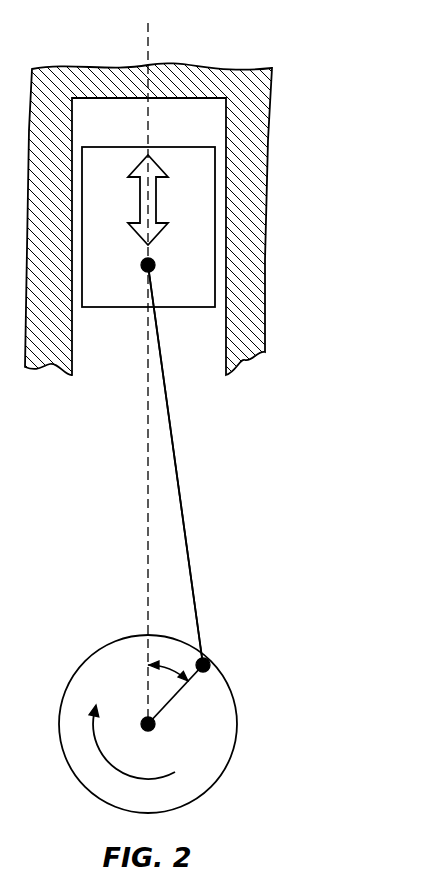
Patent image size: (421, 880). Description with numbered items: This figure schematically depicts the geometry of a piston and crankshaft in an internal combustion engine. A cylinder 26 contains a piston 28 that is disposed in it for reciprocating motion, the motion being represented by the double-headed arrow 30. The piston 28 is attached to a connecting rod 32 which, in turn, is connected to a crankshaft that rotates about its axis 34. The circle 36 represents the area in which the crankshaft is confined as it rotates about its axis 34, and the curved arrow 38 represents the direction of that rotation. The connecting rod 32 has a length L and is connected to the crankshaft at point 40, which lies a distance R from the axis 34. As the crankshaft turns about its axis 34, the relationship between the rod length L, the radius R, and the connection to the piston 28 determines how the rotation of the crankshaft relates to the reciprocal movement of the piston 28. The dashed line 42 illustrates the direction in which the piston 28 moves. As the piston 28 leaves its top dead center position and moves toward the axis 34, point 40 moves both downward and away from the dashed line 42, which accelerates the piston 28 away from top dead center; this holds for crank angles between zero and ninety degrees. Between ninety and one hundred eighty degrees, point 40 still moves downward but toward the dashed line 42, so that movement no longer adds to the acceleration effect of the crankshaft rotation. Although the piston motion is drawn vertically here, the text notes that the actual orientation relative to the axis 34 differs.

The cylinder 26 is at (224, 119).
The piston 28 is at (192, 188).
The arrow 30 is at (157, 212).
The connecting rod 32 is at (175, 443).
The axis 34 is at (153, 730).
The circle 36 is at (238, 725).
The arrow 38 is at (102, 757).
The point 40 is at (211, 660).
The dashed line 42 is at (148, 422).
The length L is at (180, 501).
The distance R is at (178, 690).